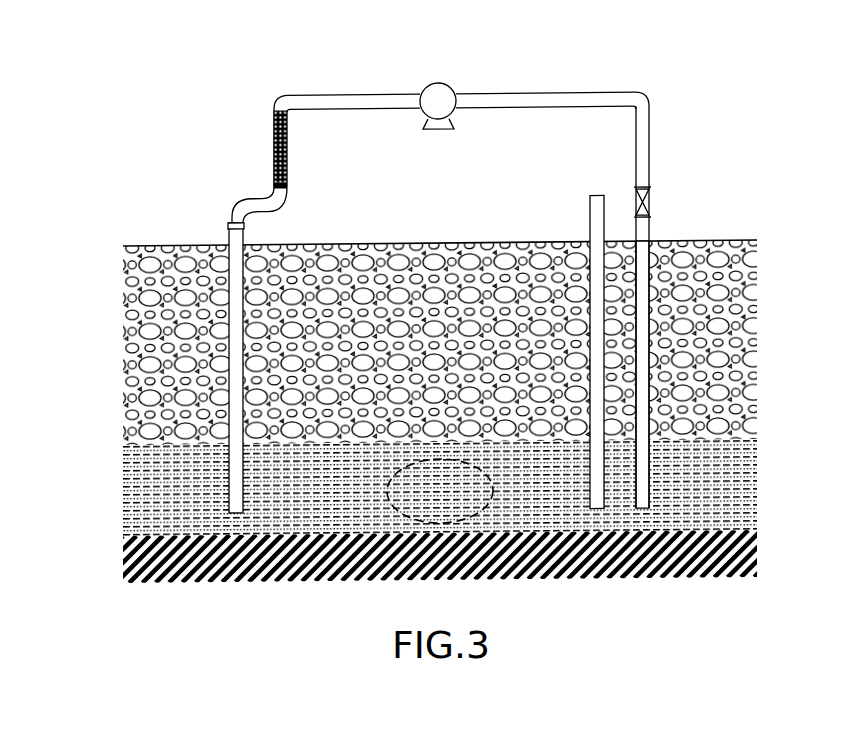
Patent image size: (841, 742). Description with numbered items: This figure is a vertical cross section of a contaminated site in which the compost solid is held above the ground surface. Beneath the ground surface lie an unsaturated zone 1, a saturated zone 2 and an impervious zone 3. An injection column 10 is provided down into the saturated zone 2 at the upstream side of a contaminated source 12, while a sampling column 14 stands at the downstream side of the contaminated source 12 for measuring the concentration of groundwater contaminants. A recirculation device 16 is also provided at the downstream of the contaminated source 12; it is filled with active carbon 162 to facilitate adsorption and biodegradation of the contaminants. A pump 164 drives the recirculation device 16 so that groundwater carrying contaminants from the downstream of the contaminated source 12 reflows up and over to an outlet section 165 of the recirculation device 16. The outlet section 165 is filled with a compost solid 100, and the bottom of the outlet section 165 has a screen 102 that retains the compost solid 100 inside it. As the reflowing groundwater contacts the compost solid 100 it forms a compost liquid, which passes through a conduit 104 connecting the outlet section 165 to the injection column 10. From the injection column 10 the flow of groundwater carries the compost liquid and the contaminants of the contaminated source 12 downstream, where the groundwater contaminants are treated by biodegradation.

The unsaturated zone 1 is at (150, 333).
The saturated zone 2 is at (150, 486).
The impervious zone 3 is at (150, 563).
The injection column 10 is at (228, 232).
The contaminated source 12 is at (438, 524).
The sampling column 14 is at (590, 224).
The recirculation device 16 is at (649, 174).
The compost solid 100 is at (273, 136).
The screen 102 is at (273, 183).
The conduit 104 is at (277, 209).
The active carbon 162 is at (650, 204).
The pump 164 is at (438, 95).
The outlet section 165 is at (287, 147).